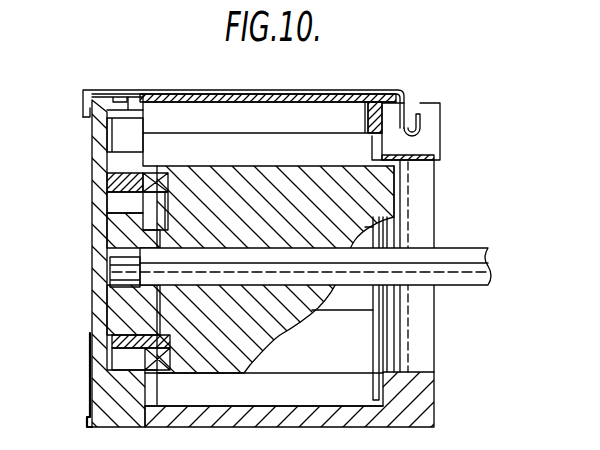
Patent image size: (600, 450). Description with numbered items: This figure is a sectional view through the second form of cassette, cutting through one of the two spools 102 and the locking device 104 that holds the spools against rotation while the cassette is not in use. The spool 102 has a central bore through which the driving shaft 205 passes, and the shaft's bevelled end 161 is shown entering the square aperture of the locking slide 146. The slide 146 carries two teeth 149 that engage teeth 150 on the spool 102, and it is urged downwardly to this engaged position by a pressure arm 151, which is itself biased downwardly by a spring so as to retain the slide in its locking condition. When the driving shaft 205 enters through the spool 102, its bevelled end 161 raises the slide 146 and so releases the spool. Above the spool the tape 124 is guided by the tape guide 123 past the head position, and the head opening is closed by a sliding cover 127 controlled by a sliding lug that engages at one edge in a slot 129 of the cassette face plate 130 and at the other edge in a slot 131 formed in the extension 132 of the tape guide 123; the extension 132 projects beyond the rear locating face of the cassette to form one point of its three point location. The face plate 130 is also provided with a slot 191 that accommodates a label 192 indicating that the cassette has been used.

The spool 102 is at (203, 353).
The locking device 104 is at (100, 302).
The tape guide 123 is at (305, 110).
The tape 124 is at (287, 163).
The sliding cover 127 is at (236, 93).
The slot 129 is at (128, 100).
The face plate 130 is at (107, 97).
The slot 131 is at (412, 107).
The extension 132 is at (422, 116).
The locking slide 146 is at (110, 208).
The teeth 149 is at (107, 343).
The teeth 150 is at (108, 364).
The pressure arm 151 is at (108, 181).
The bevelled end 161 is at (106, 264).
The slot 191 is at (86, 113).
The label 192 is at (88, 404).
The driving shaft 205 is at (489, 266).